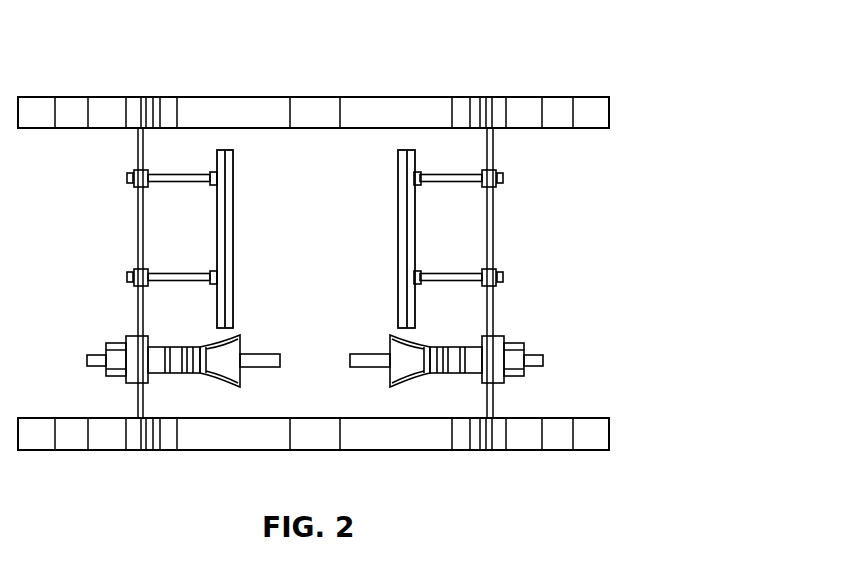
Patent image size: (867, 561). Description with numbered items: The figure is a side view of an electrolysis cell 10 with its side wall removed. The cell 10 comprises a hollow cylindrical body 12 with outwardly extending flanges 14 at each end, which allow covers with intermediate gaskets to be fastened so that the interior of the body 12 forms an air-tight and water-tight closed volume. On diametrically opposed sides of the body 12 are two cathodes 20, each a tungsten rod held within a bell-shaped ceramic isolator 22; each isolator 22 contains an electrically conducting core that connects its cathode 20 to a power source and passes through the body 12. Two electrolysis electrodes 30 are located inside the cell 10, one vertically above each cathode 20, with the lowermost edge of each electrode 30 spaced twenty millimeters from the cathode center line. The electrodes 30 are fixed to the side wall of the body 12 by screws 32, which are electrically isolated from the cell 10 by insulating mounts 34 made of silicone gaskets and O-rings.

The cell 10 is at (655, 168).
The hollow cylindrical body 12 is at (137, 405).
The outwardly extending flanges 14 is at (437, 108).
The cathodes 20 is at (265, 368).
The isolators 22 is at (200, 350).
The electrolysis electrodes 30 is at (230, 175).
The screws 32 is at (452, 275).
The insulating mounts 34 is at (133, 270).